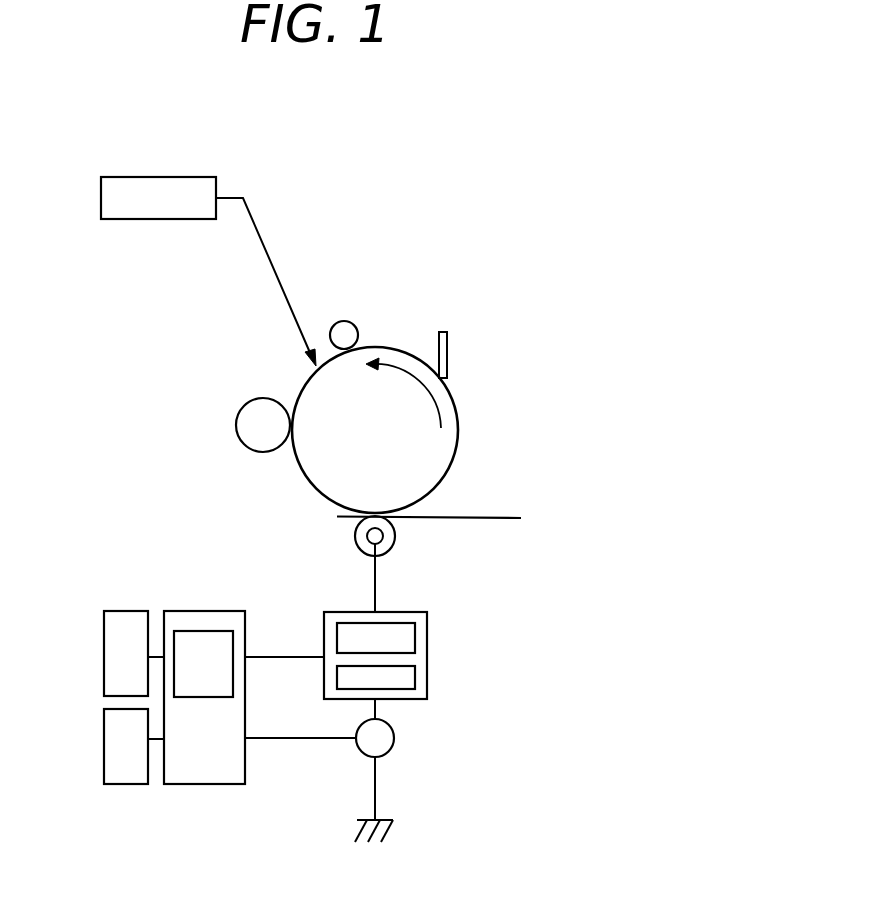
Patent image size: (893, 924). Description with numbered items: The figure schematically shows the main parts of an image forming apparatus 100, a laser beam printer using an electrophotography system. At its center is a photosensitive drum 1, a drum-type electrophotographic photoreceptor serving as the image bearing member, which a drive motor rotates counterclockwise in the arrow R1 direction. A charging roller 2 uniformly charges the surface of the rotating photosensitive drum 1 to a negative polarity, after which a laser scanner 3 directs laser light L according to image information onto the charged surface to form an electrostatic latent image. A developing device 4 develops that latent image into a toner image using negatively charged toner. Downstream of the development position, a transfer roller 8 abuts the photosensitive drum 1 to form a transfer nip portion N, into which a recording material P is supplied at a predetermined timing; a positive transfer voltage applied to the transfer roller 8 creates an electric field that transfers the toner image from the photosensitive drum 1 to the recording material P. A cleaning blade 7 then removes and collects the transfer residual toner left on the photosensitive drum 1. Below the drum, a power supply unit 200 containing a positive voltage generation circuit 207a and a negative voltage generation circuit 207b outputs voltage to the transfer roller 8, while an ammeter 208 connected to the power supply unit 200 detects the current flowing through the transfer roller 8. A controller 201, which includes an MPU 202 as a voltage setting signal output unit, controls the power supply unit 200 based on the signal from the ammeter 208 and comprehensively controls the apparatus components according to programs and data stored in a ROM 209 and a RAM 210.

The image forming apparatus 100 is at (329, 124).
The photosensitive drum 1 is at (326, 500).
The charging roller 2 is at (344, 321).
The laser scanner 3 is at (161, 177).
The developing device 4 is at (236, 414).
The cleaning blade 7 is at (448, 348).
The transfer roller 8 is at (388, 548).
The laser light L is at (273, 267).
The transfer nip portion N is at (393, 518).
The recording material P is at (492, 522).
The arrow R1 direction R1 is at (403, 393).
The power supply unit 200 is at (428, 660).
The controller 201 is at (192, 611).
The MPU 202 is at (215, 630).
The positive voltage generation circuit 207a is at (415, 638).
The negative voltage generation circuit 207b is at (415, 679).
The ammeter 208 is at (395, 738).
The ROM 209 is at (127, 611).
The RAM 210 is at (130, 784).